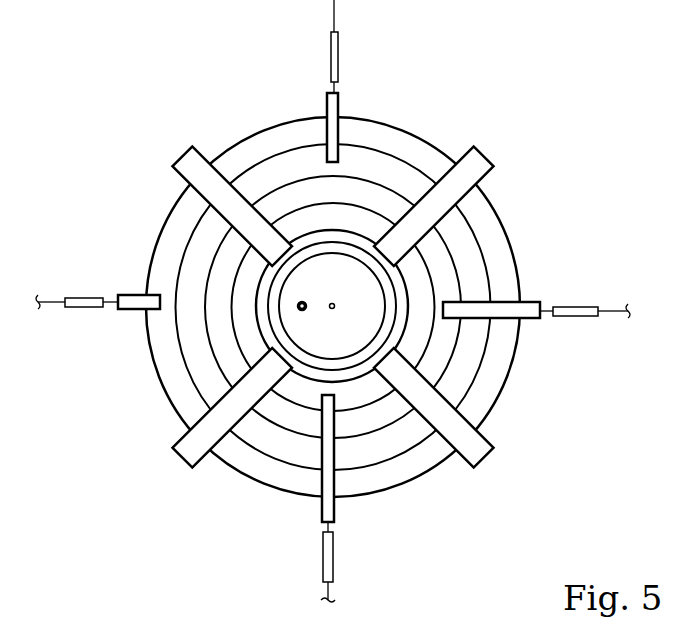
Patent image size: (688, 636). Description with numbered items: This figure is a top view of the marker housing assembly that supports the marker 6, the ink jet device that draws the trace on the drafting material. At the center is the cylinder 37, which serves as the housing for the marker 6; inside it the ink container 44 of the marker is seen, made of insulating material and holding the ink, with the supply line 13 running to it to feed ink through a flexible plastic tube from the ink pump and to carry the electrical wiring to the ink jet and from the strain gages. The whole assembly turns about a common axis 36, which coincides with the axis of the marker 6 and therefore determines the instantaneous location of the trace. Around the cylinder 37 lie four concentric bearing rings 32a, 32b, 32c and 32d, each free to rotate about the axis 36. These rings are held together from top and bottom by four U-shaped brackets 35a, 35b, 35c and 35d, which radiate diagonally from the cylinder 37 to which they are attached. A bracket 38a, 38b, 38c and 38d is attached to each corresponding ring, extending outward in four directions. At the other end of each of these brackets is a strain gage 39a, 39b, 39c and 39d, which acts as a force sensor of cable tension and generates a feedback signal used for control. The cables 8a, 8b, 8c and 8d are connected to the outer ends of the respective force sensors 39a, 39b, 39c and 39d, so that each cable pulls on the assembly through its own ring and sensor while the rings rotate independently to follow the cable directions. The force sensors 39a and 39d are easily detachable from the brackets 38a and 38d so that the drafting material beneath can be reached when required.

The marker 6 is at (338, 281).
The supply line 13 is at (302, 312).
The common axis 36 is at (336, 306).
The cylinder 37 is at (300, 373).
The ink container 44 is at (330, 362).
The bearing ring 32a is at (333, 307).
The bearing ring 32b is at (333, 307).
The bearing ring 32c is at (333, 307).
The bearing ring 32d is at (333, 307).
The U-shaped bracket 35a is at (183, 160).
The U-shaped bracket 35b is at (471, 178).
The U-shaped bracket 35c is at (468, 456).
The U-shaped bracket 35d is at (190, 447).
The bracket 38a is at (137, 309).
The bracket 38b is at (334, 113).
The bracket 38c is at (532, 318).
The bracket 38d is at (328, 497).
The strain gage 39a is at (82, 298).
The strain gage 39b is at (331, 50).
The strain gage 39c is at (576, 304).
The strain gage 39d is at (333, 562).
The cable 8a is at (40, 305).
The cable 8b is at (338, 10).
The cable 8c is at (626, 313).
The cable 8d is at (325, 598).